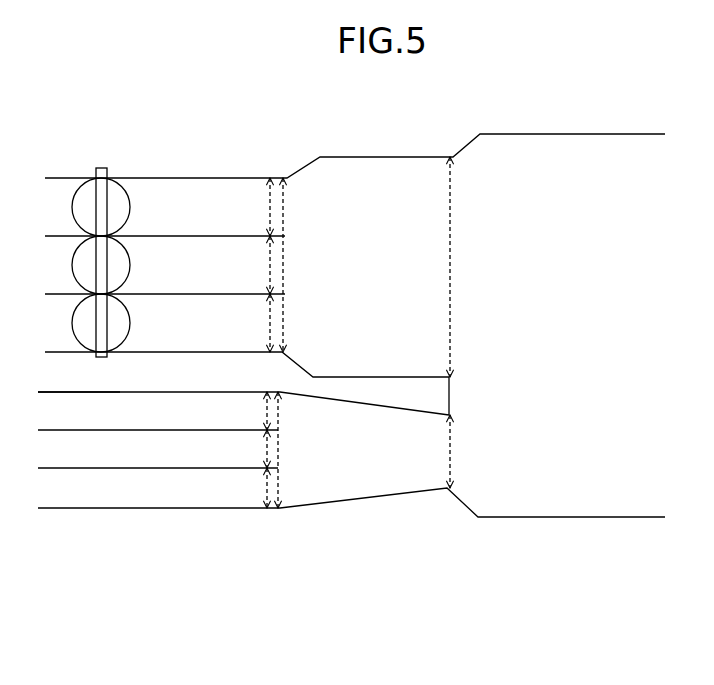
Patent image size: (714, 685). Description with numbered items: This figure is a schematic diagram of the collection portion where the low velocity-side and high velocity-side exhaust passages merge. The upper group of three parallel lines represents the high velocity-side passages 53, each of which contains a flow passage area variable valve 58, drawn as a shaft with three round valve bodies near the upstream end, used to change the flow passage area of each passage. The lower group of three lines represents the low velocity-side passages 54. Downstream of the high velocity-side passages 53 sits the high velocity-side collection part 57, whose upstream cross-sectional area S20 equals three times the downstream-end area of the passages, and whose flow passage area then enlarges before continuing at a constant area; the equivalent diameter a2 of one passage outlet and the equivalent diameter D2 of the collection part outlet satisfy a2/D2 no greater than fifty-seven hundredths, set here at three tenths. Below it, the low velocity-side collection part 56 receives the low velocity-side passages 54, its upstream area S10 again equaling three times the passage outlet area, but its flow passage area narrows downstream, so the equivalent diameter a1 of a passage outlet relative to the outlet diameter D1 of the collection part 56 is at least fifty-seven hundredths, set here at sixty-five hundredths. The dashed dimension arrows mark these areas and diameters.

The high velocity-side passage 53 is at (150, 326).
The low velocity-side passage 54 is at (92, 418).
The low velocity-side collection part 56 is at (395, 495).
The high velocity-side collection part 57 is at (385, 166).
The flow passage area variable valve 58 is at (85, 202).
The equivalent diameter of downstream end of low velocity-side passage a1 is at (265, 412).
The equivalent diameter of downstream end of high velocity-side passage a2 is at (268, 323).
The cross-sectional area of upstream end of low velocity-side collection part S10 is at (282, 455).
The cross-sectional area of upstream end of high velocity-side collection part S20 is at (285, 265).
The equivalent diameter of downstream end of low velocity-side collection part D1 is at (500, 451).
The equivalent diameter of downstream end of high velocity-side collection part D2 is at (502, 267).